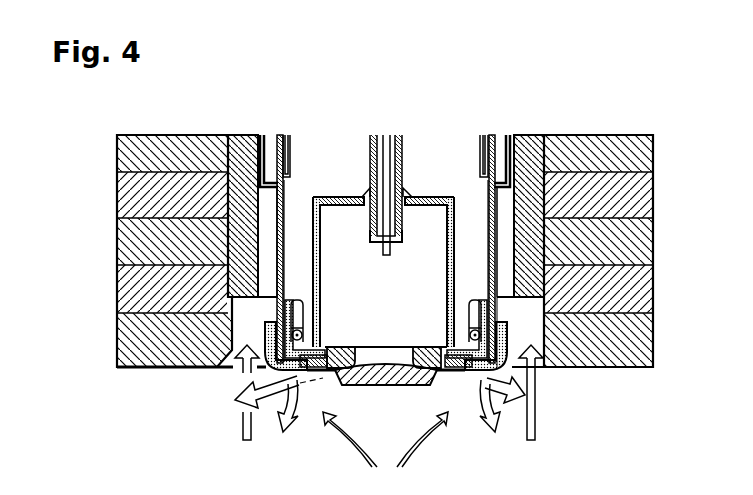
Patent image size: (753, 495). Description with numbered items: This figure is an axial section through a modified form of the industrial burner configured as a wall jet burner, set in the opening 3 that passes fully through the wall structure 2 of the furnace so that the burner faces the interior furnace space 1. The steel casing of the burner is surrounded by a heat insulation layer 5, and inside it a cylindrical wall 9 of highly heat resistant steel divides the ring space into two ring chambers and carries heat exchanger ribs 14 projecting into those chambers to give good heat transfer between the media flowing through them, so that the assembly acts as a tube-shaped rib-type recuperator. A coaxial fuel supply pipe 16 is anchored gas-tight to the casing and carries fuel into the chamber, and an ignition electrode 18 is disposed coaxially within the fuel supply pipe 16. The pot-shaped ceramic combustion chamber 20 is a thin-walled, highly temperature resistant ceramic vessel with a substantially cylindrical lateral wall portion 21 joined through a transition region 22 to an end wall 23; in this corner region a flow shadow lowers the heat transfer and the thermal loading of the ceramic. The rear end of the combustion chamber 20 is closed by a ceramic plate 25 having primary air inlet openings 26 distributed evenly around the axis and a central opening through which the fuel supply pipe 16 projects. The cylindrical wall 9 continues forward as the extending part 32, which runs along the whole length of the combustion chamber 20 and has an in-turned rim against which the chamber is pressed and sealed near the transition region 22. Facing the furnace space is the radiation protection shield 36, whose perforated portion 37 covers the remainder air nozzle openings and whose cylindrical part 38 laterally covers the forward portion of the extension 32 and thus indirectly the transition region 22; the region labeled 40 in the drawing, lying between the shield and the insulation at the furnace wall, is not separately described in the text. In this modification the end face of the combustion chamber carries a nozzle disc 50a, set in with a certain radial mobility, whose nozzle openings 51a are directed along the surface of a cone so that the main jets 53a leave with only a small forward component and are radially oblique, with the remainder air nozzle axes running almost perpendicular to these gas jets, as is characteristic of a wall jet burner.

The interior furnace space 1 is at (608, 468).
The wall structure 2 is at (172, 133).
The opening 3 is at (232, 135).
The heat insulation layer 5 is at (527, 147).
The cylindrical wall 9 is at (279, 140).
The heat exchanger ribs 14 is at (286, 140).
The fuel supply pipe 16 is at (398, 136).
The ignition electrode 18 is at (384, 136).
The ceramic combustion chamber 20 is at (303, 283).
The cylindrical lateral wall portion 21 is at (447, 287).
The transition region 22 is at (449, 352).
The end wall 23 is at (445, 373).
The ceramic plate 25 is at (328, 197).
The primary air inlet openings 26 is at (432, 196).
The forwardly extending part 32 is at (493, 197).
The radiation protection shield 36 is at (512, 367).
The shield portion 37 is at (465, 366).
The cylindrical part 38 is at (507, 322).
The recess 40 is at (238, 325).
The nozzle disc 50a is at (338, 349).
The nozzle openings 51a is at (337, 372).
The main jets 53a is at (250, 392).